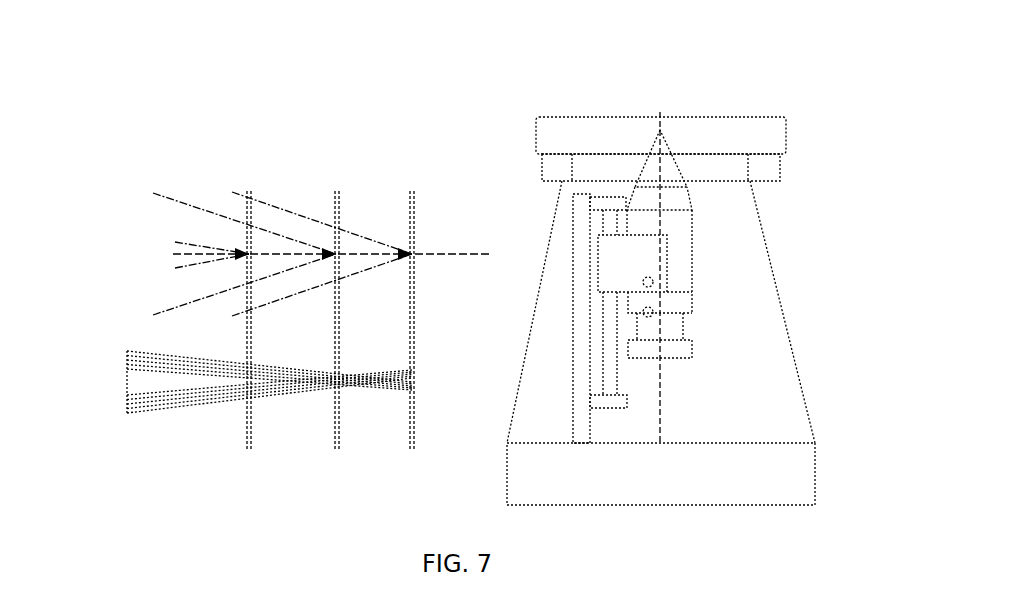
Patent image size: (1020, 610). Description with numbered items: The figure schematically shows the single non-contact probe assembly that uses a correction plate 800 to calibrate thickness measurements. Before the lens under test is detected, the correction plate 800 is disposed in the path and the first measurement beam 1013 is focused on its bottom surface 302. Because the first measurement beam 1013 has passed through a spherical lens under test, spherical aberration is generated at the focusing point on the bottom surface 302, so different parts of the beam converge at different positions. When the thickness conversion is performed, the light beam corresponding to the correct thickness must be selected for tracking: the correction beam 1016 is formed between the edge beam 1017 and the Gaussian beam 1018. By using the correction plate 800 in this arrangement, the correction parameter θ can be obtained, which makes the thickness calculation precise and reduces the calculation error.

The correction plate 800 is at (593, 128).
The bottom surface 302 is at (335, 450).
The correction beam 1016 is at (197, 207).
The edge beam 1017 is at (308, 215).
The Gaussian beam 1018 is at (190, 242).
The first measurement beam 1013 is at (157, 390).